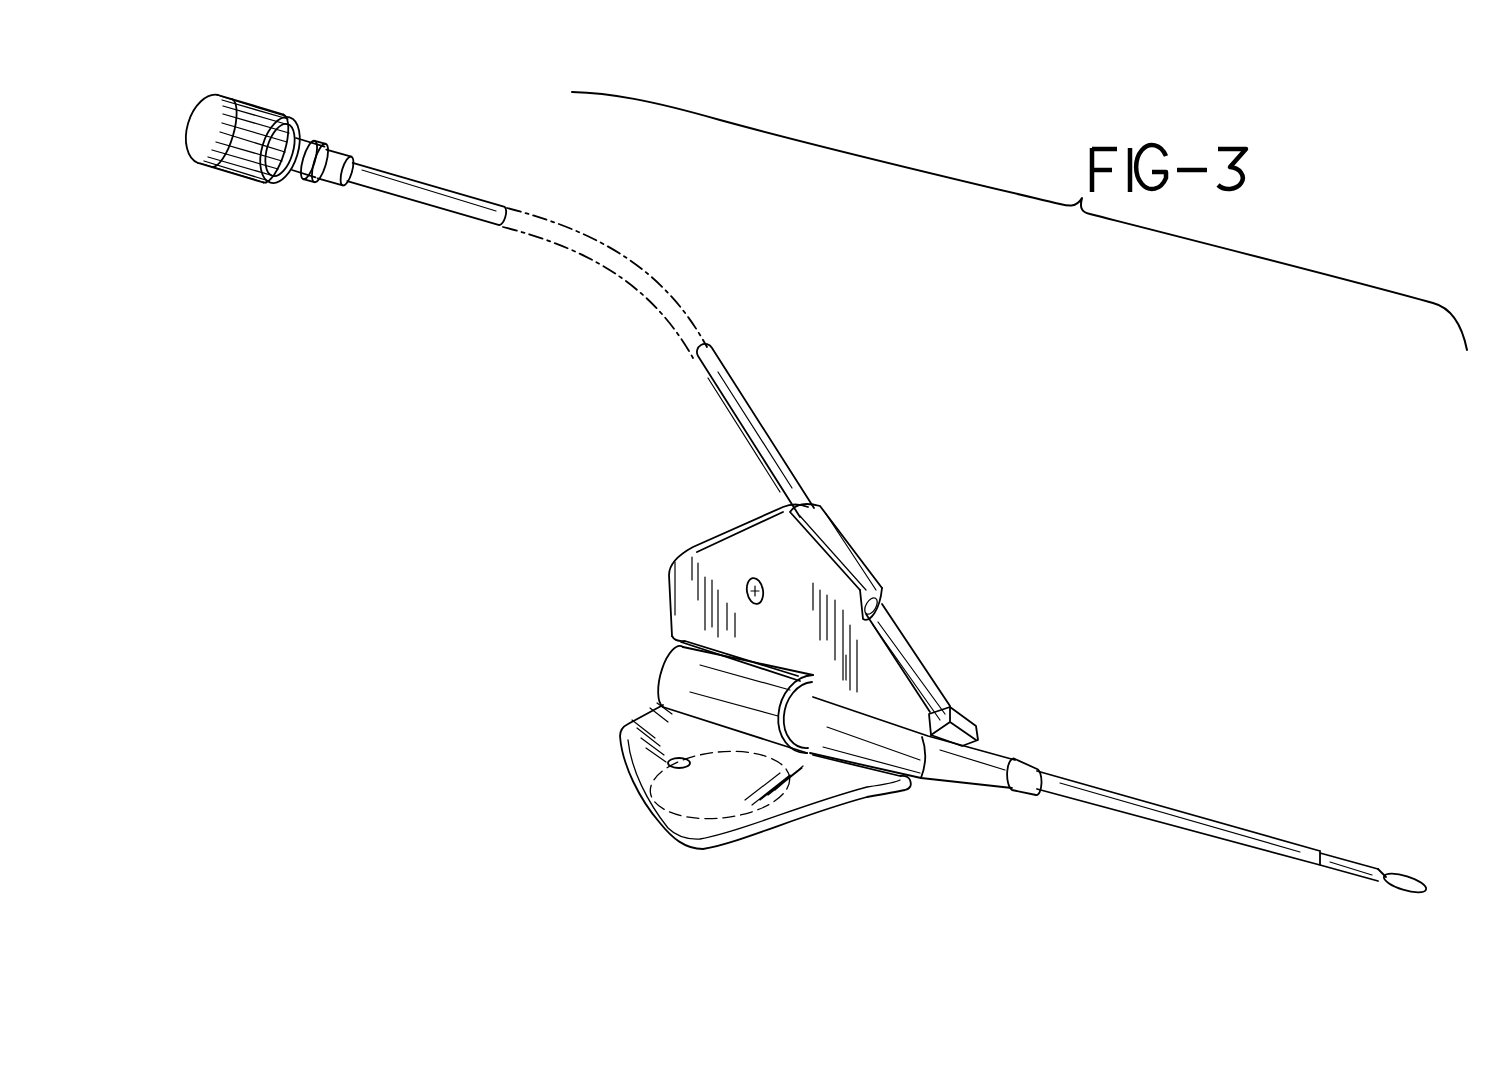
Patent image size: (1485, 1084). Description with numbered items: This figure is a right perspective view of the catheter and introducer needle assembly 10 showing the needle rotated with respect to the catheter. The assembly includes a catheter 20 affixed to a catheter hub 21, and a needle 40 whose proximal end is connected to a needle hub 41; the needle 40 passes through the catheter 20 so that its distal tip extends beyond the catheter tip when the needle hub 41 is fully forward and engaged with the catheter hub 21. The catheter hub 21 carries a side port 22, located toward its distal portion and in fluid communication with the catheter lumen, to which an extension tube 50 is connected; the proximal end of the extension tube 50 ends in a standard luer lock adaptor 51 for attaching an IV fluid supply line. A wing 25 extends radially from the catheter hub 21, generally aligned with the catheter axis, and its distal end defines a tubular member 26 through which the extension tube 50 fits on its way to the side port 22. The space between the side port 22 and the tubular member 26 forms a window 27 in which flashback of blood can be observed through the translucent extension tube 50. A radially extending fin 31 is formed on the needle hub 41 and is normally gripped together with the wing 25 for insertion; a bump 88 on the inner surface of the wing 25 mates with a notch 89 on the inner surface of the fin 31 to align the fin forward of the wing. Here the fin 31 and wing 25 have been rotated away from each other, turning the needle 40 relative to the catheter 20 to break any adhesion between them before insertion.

The catheter and introducer needle assembly 10 is at (1033, 478).
The catheter 20 is at (1255, 830).
The catheter hub 21 is at (975, 787).
The side port 22 is at (972, 724).
The wing 25 is at (847, 643).
The tubular member 26 is at (853, 545).
The window 27 is at (915, 657).
The fin 31 is at (638, 800).
The needle 40 is at (1398, 876).
The needle hub 41 is at (664, 672).
The extension tube 50 is at (702, 373).
The luer lock adaptor 51 is at (213, 168).
The bump 88 is at (746, 587).
The notch 89 is at (677, 758).